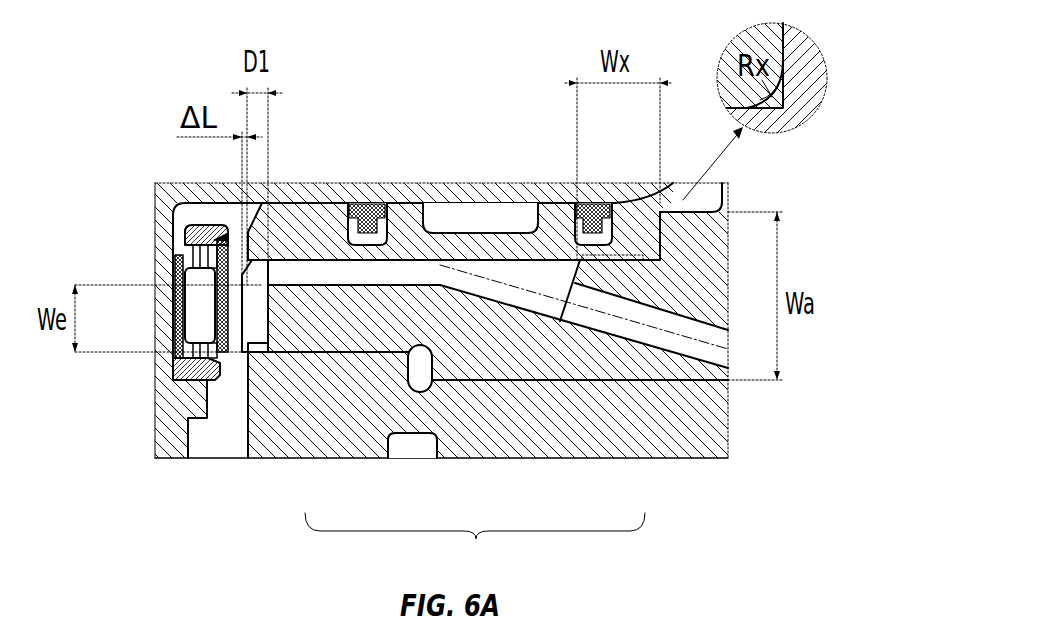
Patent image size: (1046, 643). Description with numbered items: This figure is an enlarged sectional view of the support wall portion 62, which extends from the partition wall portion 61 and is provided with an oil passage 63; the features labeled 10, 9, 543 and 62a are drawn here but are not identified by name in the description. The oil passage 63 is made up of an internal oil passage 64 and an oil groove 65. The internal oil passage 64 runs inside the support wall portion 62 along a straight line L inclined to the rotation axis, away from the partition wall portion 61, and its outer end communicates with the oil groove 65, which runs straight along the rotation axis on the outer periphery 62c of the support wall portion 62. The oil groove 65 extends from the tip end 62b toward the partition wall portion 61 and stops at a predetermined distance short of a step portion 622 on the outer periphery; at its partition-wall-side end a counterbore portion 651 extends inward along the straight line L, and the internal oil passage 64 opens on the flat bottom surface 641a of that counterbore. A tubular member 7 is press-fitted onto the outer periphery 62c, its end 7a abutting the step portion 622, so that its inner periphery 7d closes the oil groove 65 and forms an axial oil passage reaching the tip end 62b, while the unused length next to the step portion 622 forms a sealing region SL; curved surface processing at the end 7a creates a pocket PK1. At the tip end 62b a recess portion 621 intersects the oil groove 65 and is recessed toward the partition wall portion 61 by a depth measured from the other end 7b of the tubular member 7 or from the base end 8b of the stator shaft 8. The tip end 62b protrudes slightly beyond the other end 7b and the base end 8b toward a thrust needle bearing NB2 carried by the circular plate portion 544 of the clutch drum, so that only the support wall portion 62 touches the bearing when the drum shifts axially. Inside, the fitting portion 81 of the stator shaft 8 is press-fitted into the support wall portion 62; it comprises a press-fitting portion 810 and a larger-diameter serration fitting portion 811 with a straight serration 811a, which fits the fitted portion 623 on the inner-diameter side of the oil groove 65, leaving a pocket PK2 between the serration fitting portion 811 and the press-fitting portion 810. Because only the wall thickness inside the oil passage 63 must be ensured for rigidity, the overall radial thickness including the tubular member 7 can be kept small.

The motor unit 10 is at (216, 211).
The tubular member 7 is at (511, 190).
The end of tubular member 7a is at (786, 48).
The other end of tubular member 7b is at (252, 230).
The inner periphery of tubular member 7d is at (430, 208).
The fastener 9 is at (367, 204).
The bearing holder portion 543 is at (300, 200).
The circular plate portion 544 is at (172, 238).
The bottom surface of counterbore portion 641a is at (546, 203).
The partition wall portion 61 is at (724, 199).
The support wall portion 62 is at (521, 279).
The plate end portion 62a is at (773, 133).
The tip end of support wall portion 62b is at (236, 338).
The outer periphery of support wall portion 62c is at (498, 332).
The recess portion 621 is at (262, 300).
The step portion 622 is at (664, 268).
The fitted portion 623 is at (410, 372).
The counterbore portion 651 is at (500, 315).
The oil passage 63 is at (515, 440).
The internal oil passage 64 is at (545, 418).
The oil groove 65 is at (455, 418).
The stator shaft 8 is at (472, 371).
The base end of stator shaft 8b is at (228, 410).
The fitting portion 81 is at (475, 540).
The press-fitting portion 810 is at (605, 452).
The serration fitting portion 811 is at (342, 368).
The serration 811a is at (488, 405).
The pocket PK1 is at (790, 97).
The pocket PK2 is at (408, 429).
The thrust needle bearing NB2 is at (190, 308).
The sealing region SL is at (630, 261).